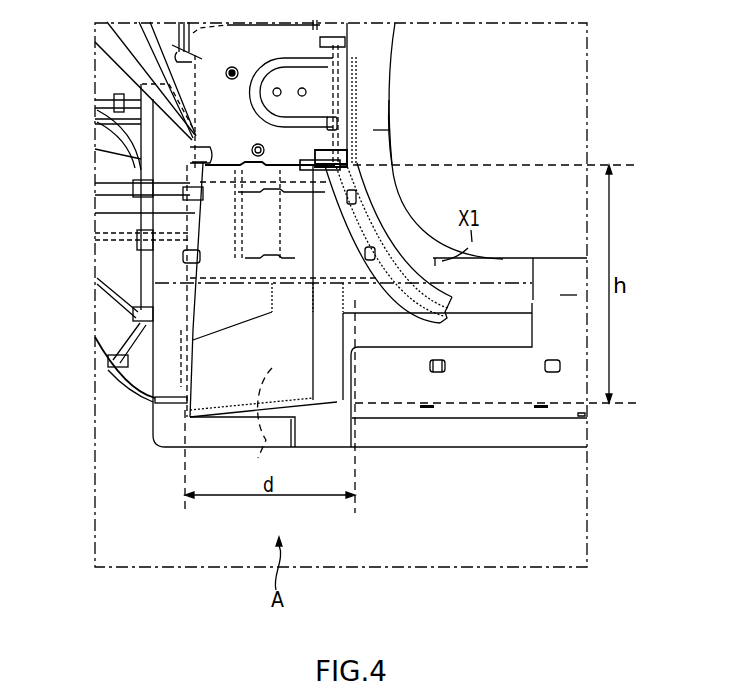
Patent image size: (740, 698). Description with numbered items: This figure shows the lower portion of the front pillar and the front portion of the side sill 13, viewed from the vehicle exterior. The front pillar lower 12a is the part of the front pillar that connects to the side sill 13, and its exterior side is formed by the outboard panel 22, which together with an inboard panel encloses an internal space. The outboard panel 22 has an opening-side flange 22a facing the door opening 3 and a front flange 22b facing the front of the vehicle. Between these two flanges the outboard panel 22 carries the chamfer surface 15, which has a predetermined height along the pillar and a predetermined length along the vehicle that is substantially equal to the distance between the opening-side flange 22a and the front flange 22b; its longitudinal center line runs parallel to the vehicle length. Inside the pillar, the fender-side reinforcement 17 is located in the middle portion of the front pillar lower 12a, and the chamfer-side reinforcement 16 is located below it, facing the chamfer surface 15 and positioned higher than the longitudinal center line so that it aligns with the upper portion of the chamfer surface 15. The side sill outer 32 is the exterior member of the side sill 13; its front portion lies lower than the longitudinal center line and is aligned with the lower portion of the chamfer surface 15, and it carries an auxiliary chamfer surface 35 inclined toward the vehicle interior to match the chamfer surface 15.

The door opening 3 is at (569, 89).
The front pillar lower 12a is at (443, 130).
The side sill 13 is at (565, 258).
The chamfer surface 15 is at (213, 390).
The chamfer-side reinforcement 16 is at (357, 192).
The fender-side reinforcement 17 is at (347, 67).
The outboard panel 22 is at (401, 173).
The opening-side flange 22a is at (380, 110).
The front flange 22b is at (165, 355).
The side sill outer 32 is at (492, 438).
The auxiliary chamfer surface 35 is at (262, 447).